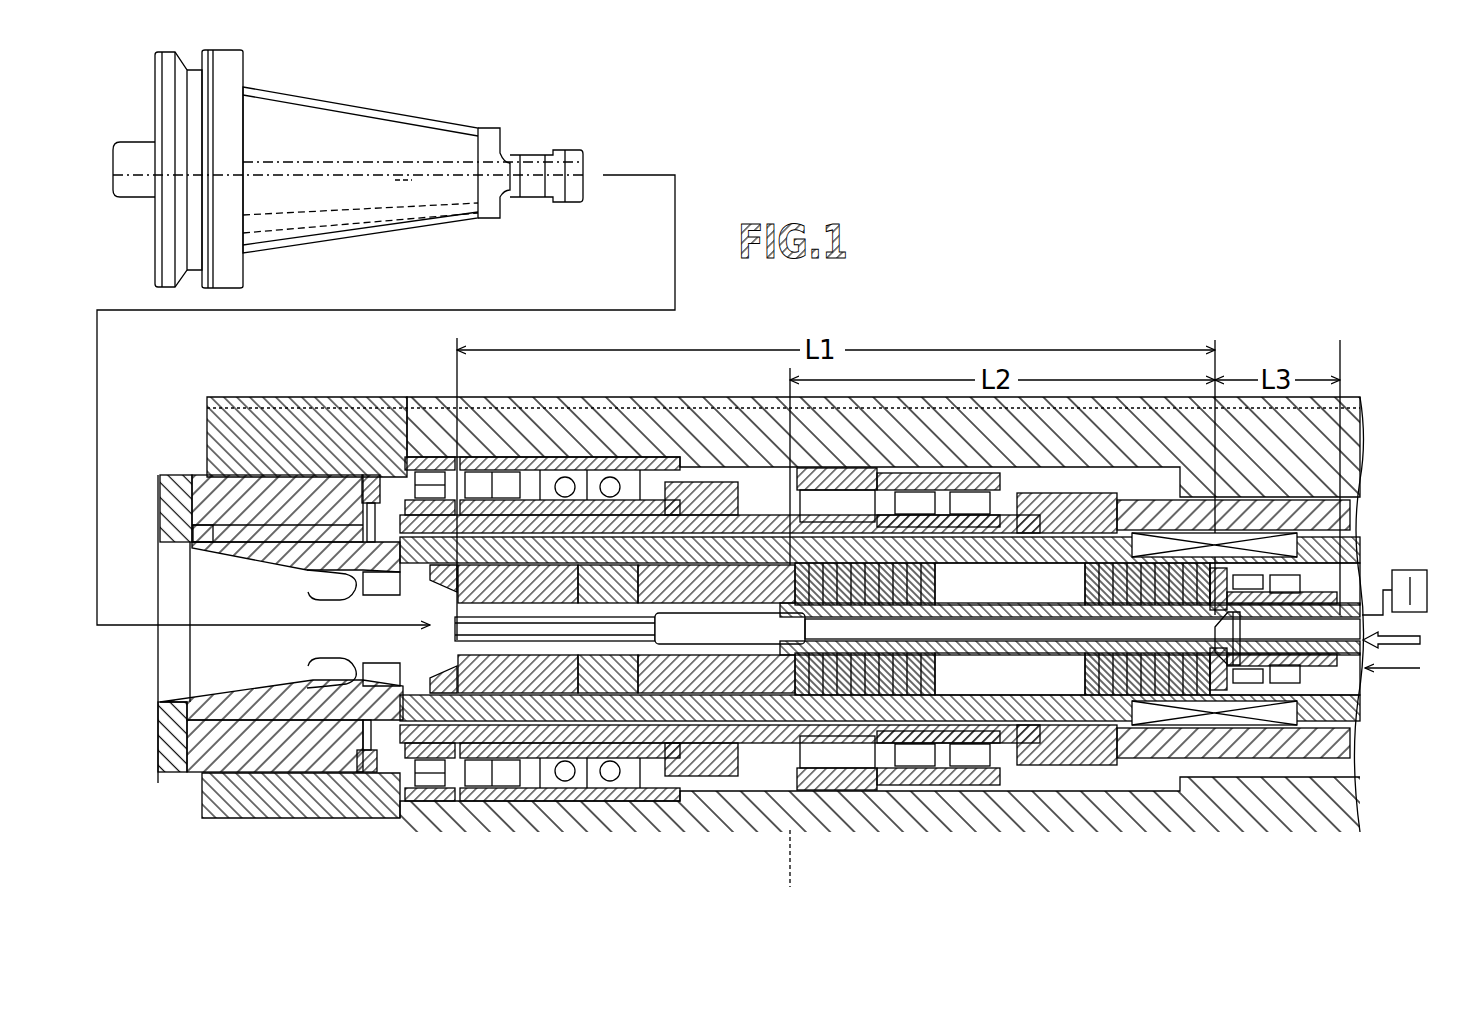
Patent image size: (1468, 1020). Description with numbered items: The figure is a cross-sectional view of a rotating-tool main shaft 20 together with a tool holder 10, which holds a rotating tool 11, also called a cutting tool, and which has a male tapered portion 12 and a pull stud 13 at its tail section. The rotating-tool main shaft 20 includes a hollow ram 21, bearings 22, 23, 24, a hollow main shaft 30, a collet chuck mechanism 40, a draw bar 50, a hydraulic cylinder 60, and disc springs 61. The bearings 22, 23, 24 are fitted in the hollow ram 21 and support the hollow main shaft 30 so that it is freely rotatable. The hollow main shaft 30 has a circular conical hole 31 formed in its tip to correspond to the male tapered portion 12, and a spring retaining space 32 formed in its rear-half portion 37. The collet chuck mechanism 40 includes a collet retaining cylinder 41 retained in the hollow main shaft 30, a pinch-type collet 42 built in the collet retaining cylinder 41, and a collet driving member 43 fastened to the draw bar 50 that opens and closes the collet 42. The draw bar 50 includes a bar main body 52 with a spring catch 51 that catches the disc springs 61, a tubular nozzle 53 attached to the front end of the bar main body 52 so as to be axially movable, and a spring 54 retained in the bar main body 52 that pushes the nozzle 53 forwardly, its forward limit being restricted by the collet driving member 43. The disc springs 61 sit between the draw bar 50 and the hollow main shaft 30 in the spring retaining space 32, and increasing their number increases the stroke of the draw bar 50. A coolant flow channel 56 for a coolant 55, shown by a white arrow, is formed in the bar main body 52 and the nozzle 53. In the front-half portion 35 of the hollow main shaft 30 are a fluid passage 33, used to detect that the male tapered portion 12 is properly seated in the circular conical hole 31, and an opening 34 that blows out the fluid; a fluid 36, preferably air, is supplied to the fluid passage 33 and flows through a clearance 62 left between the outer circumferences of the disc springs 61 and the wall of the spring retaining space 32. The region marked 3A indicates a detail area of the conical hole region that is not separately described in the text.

The tool holder 10 is at (472, 93).
The rotating tool 11 is at (140, 140).
The male tapered portion 12 is at (352, 130).
The pull stud 13 is at (538, 200).
The rotating-tool main shaft 20 is at (1295, 348).
The hollow ram 21 is at (736, 440).
The bearing 22 is at (440, 455).
The bearing 23 is at (605, 458).
The bearing 24 is at (936, 476).
The hollow main shaft 30 is at (297, 500).
The circular conical hole 31 is at (240, 686).
The spring retaining space 32 is at (986, 580).
The fluid passage 33 is at (661, 555).
The opening 34 is at (376, 622).
The front-half portion 35 is at (790, 887).
The fluid 36 is at (1397, 685).
The rear-half portion 37 is at (1360, 890).
The collet chuck mechanism 40 is at (675, 854).
The collet retaining cylinder 41 is at (578, 684).
The collet 42 is at (513, 668).
The collet driving member 43 is at (647, 660).
The draw bar 50 is at (1028, 668).
The spring catch 51 is at (1214, 688).
The bar main body 52 is at (1069, 648).
The nozzle 53 is at (447, 634).
The spring 54 is at (737, 641).
The coolant 55 is at (1416, 650).
The coolant flow channel 56 is at (390, 178).
The hydraulic cylinder 60 is at (1407, 570).
The disc springs 61 is at (871, 682).
The clearance 62 is at (1082, 577).
The detail region 3A is at (306, 576).